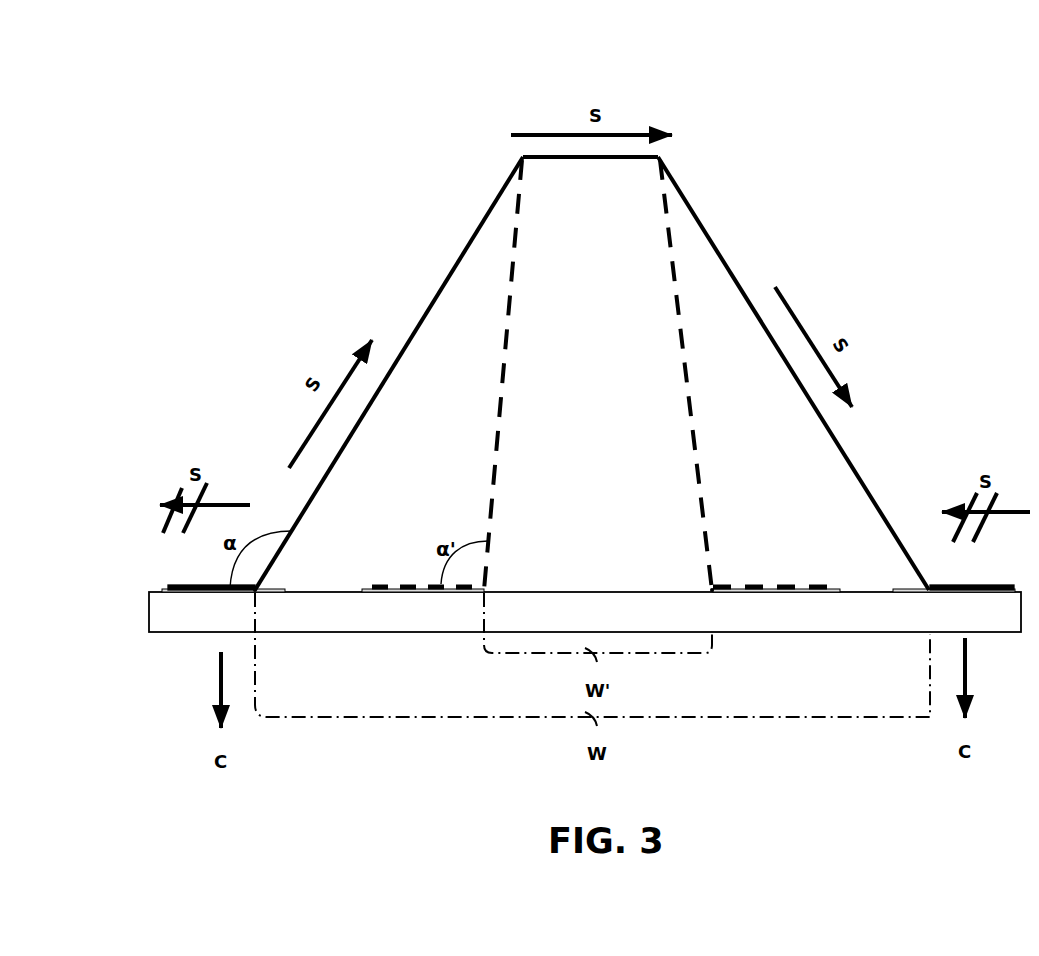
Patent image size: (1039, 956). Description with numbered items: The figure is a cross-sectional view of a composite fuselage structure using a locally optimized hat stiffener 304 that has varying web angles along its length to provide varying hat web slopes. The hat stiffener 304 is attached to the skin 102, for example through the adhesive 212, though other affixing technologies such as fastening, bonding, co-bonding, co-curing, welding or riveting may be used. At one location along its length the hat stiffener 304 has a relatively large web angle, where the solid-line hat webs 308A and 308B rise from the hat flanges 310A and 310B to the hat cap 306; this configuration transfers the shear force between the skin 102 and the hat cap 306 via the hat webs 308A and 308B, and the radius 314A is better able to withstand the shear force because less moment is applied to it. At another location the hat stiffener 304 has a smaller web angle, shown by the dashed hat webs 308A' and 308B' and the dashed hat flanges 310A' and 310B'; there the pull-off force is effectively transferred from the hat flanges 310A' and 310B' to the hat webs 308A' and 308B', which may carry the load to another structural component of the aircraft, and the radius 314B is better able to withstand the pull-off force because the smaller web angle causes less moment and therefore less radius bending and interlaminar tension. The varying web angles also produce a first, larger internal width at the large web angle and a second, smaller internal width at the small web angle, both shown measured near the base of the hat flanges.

The hat stiffener 304 is at (358, 148).
The skin 102 is at (752, 632).
The adhesive 212 is at (168, 590).
The hat cap 306 is at (543, 159).
The hat web 308A is at (389, 373).
The hat web 308B is at (793, 373).
The hat web 308A' is at (470, 375).
The hat web 308B' is at (714, 375).
The hat flange 310A is at (186, 573).
The hat flange 310B is at (984, 572).
The hat flange 310A' is at (421, 560).
The hat flange 310B' is at (784, 560).
The radius 314A is at (280, 574).
The radius 314B is at (726, 560).